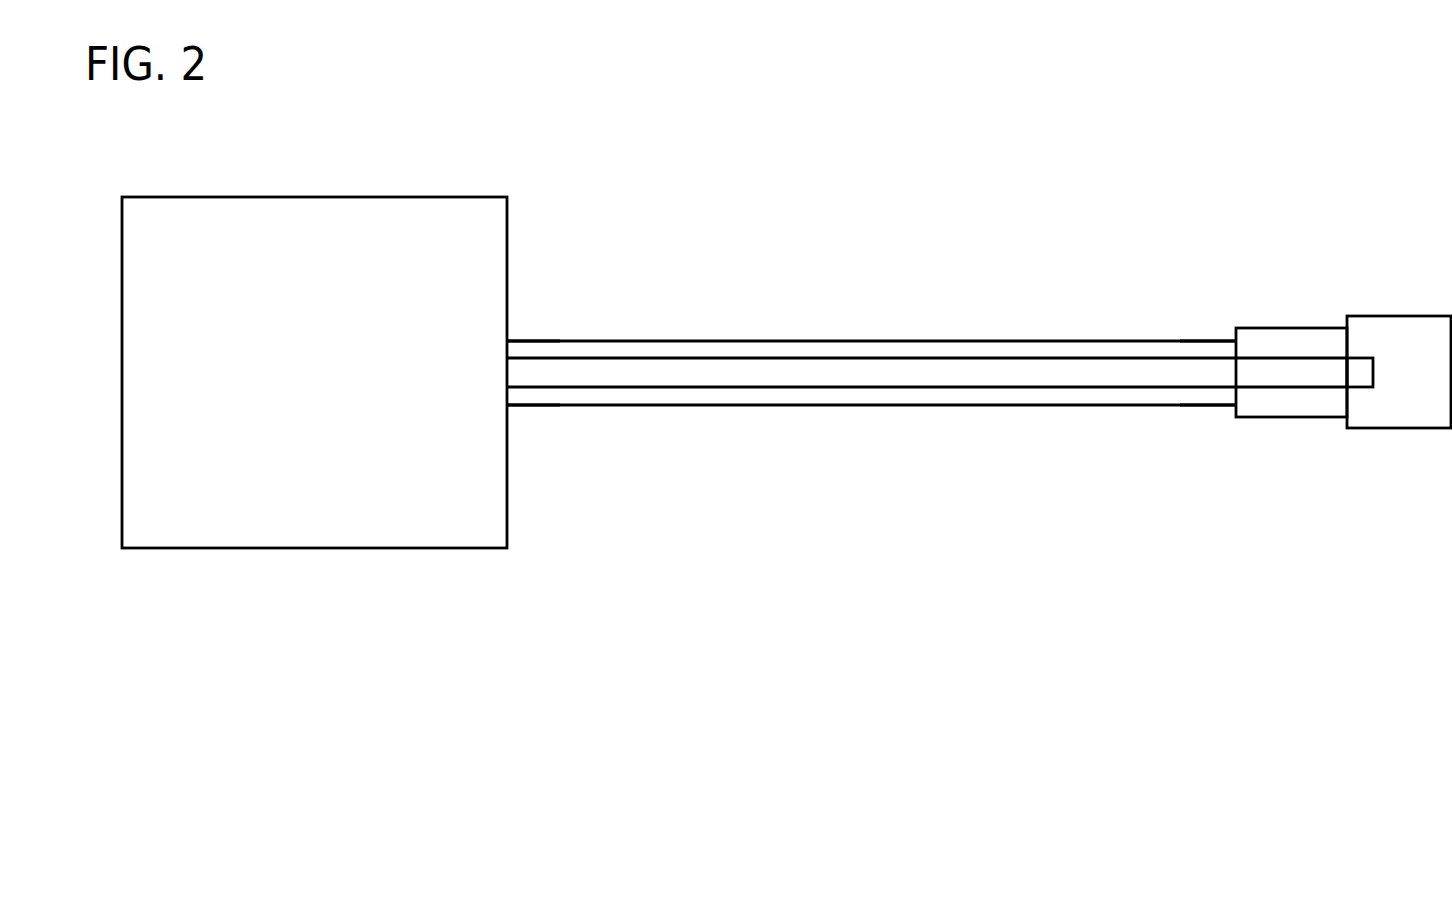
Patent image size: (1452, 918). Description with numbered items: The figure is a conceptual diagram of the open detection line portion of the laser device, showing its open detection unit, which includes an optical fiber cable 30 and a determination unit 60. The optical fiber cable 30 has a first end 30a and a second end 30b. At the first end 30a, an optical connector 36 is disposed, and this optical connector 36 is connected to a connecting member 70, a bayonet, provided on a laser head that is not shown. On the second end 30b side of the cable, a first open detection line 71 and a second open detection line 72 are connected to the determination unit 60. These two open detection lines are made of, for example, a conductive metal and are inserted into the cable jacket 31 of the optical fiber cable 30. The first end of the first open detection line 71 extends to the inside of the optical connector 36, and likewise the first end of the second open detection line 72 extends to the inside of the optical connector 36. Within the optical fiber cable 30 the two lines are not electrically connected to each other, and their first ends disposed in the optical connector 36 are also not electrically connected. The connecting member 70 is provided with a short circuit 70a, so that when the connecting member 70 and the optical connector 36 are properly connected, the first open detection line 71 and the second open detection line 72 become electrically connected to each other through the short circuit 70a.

The determination unit 60 is at (507, 240).
The optical fiber cable 30 is at (1122, 278).
The cable jacket 31 is at (684, 406).
The first open detection line 71 is at (993, 358).
The second open detection line 72 is at (993, 387).
The second end 30b is at (541, 406).
The first end 30a is at (1217, 408).
The optical connector 36 is at (1285, 420).
The connecting member 70 is at (1397, 430).
The short circuit 70a is at (1363, 355).